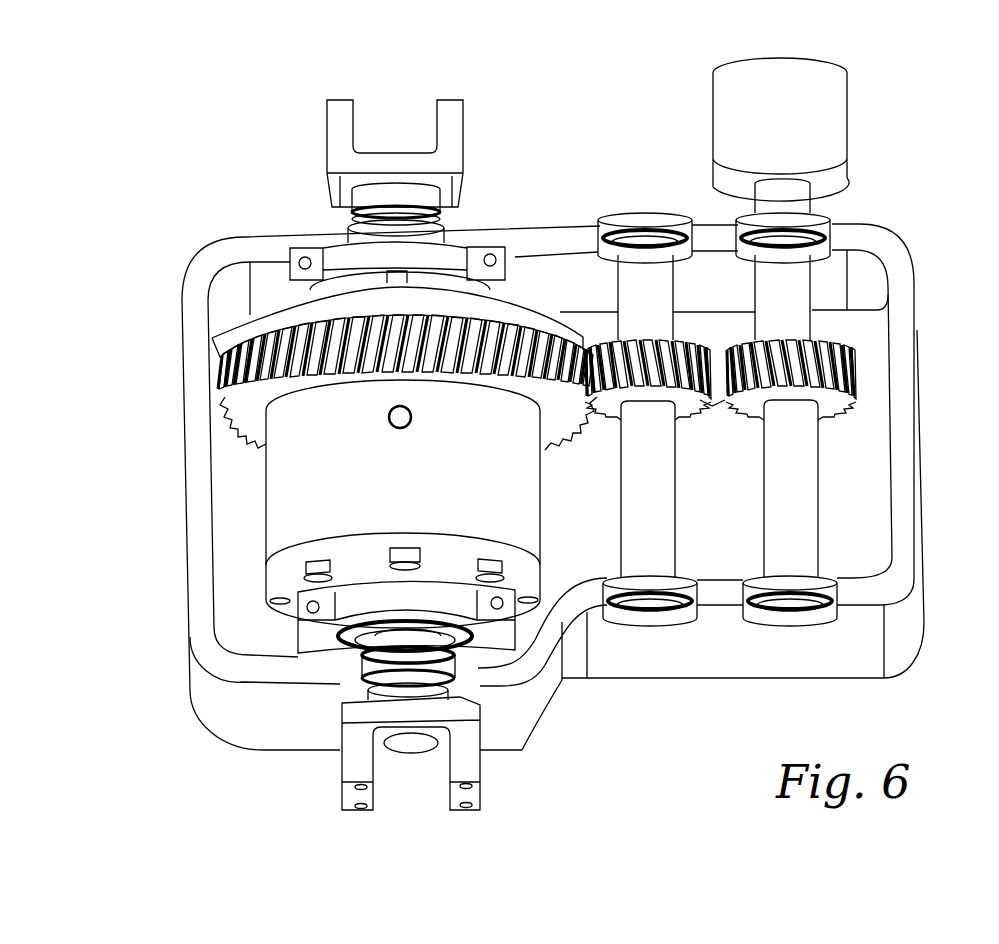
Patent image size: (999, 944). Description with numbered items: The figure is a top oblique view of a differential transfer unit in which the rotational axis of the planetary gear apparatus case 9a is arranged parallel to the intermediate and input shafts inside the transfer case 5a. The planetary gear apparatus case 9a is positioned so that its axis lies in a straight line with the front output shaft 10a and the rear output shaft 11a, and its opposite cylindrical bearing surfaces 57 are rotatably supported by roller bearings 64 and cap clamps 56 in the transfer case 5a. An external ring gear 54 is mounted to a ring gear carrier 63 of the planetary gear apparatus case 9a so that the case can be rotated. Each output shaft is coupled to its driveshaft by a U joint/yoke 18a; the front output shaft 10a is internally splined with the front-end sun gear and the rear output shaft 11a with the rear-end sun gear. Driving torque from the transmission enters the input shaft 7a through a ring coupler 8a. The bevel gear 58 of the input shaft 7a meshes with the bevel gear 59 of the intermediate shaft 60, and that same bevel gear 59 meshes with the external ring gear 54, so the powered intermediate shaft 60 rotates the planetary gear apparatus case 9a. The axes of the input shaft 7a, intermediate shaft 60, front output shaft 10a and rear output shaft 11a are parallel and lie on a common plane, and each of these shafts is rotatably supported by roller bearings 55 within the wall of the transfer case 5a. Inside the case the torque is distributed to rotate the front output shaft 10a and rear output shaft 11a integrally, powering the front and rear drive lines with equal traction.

The transfer case 5a is at (897, 445).
The input shaft 7a is at (780, 270).
The ring coupler 8a is at (793, 100).
The planetary gear apparatus case 9a is at (417, 456).
The front output shaft 10a is at (430, 212).
The rear output shaft 11a is at (443, 643).
The U joint/yoke 18a is at (440, 160).
The external ring gear 54 is at (250, 370).
The roller bearings 55 is at (380, 225).
The cap clamps 56 is at (400, 247).
The cylindrical bearing surfaces 57 is at (462, 655).
The bevel gear 58 is at (858, 370).
The bevel gear 59 is at (705, 398).
The intermediate shaft 60 is at (648, 285).
The ring gear carrier 63 is at (285, 313).
The roller bearings 64 is at (398, 632).